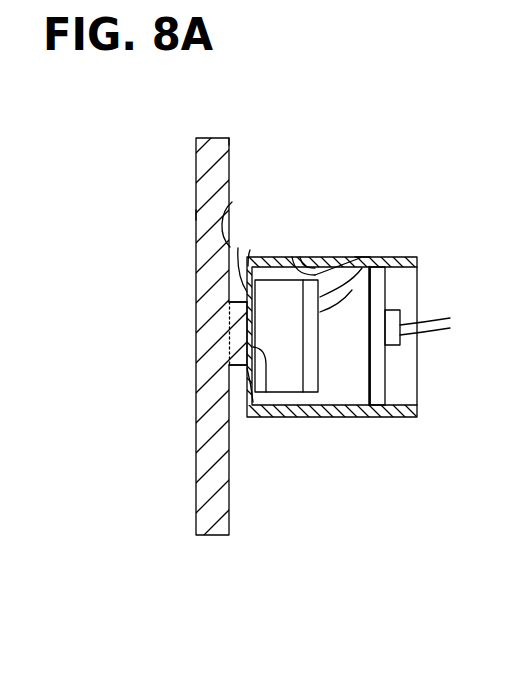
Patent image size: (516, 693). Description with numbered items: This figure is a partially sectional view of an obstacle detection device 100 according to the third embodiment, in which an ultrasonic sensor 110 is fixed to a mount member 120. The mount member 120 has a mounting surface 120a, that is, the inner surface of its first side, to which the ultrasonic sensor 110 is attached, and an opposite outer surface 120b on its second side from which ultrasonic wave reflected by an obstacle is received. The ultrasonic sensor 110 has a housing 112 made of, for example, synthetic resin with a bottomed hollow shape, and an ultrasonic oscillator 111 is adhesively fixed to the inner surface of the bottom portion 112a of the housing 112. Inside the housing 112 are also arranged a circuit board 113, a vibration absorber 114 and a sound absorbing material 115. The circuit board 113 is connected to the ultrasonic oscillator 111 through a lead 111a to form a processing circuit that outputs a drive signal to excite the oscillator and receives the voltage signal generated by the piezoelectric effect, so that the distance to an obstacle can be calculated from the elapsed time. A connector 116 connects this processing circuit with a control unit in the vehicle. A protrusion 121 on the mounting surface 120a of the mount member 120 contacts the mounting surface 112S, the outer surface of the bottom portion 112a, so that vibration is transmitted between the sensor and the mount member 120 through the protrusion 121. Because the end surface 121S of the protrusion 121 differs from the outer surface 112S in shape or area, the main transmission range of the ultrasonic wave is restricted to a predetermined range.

The obstacle detection device 100 is at (343, 197).
The ultrasonic sensor 110 is at (366, 347).
The ultrasonic oscillator 111 is at (273, 407).
The lead 111a is at (362, 258).
The housing 112 is at (308, 257).
The bottom portion 112a is at (238, 248).
The mounting surface 112S is at (228, 213).
The circuit board 113 is at (377, 285).
The vibration absorber 114 is at (340, 387).
The sound absorbing material 115 is at (288, 380).
The connector 116 is at (388, 343).
The mount member 120 is at (184, 168).
The mounting surface 120a is at (230, 138).
The outer surface 120b is at (197, 215).
The protrusion 121 is at (233, 368).
The end surface 121S is at (252, 370).